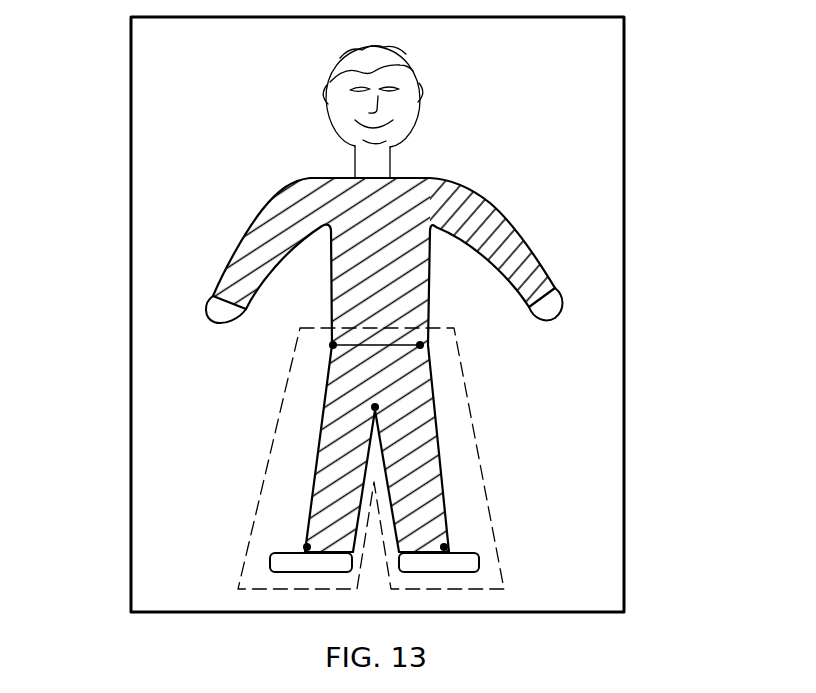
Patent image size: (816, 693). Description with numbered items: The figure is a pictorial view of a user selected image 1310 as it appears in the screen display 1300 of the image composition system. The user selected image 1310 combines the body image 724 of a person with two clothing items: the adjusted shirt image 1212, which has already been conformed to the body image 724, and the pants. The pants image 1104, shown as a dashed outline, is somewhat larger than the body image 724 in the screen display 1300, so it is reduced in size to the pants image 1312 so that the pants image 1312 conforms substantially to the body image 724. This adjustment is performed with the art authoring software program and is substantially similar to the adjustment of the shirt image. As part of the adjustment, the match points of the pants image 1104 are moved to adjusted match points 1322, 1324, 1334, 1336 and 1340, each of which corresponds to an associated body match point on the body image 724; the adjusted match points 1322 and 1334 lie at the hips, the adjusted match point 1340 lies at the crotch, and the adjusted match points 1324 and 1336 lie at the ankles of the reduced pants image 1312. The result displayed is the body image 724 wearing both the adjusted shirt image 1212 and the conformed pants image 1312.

The screen display 1300 is at (155, 72).
The user selected image 1310 is at (597, 87).
The body image 724 is at (329, 64).
The adjusted shirt image 1212 is at (505, 216).
The pants image 1312 is at (425, 452).
The pants image 1104 is at (275, 431).
The adjusted match point 1322 is at (333, 345).
The adjusted match point 1334 is at (420, 345).
The adjusted match point 1340 is at (375, 407).
The adjusted match point 1324 is at (307, 547).
The adjusted match point 1336 is at (444, 547).